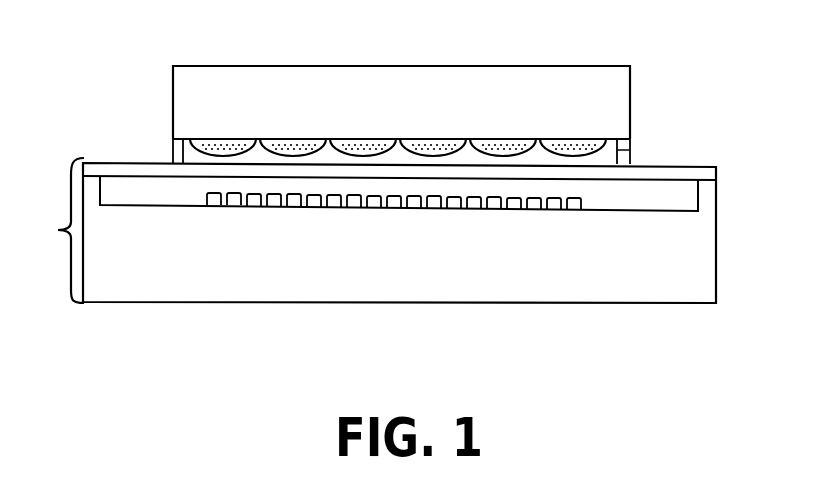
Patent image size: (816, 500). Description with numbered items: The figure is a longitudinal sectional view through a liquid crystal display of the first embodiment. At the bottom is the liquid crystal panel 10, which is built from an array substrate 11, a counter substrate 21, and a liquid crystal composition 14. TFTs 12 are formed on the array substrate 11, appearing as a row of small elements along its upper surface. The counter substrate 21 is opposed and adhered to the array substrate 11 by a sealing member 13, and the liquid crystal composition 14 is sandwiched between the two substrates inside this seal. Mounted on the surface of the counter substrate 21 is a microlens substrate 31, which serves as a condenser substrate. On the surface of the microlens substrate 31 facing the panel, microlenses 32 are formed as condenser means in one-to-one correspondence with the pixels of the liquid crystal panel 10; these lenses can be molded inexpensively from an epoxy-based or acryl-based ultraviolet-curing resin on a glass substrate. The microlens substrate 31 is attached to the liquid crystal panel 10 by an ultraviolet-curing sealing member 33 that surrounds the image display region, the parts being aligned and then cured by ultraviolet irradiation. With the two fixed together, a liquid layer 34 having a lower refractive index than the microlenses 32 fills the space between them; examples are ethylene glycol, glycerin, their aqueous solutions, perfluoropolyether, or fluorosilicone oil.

The liquid crystal panel 10 is at (57, 231).
The array substrate 11 is at (708, 266).
The TFTs 12 is at (345, 207).
The sealing member 13 is at (716, 191).
The liquid crystal composition 14 is at (608, 198).
The counter substrate 21 is at (700, 165).
The microlens substrate 31 is at (572, 66).
The microlenses 32 is at (505, 139).
The sealing member 33 is at (632, 152).
The liquid layer 34 is at (418, 140).